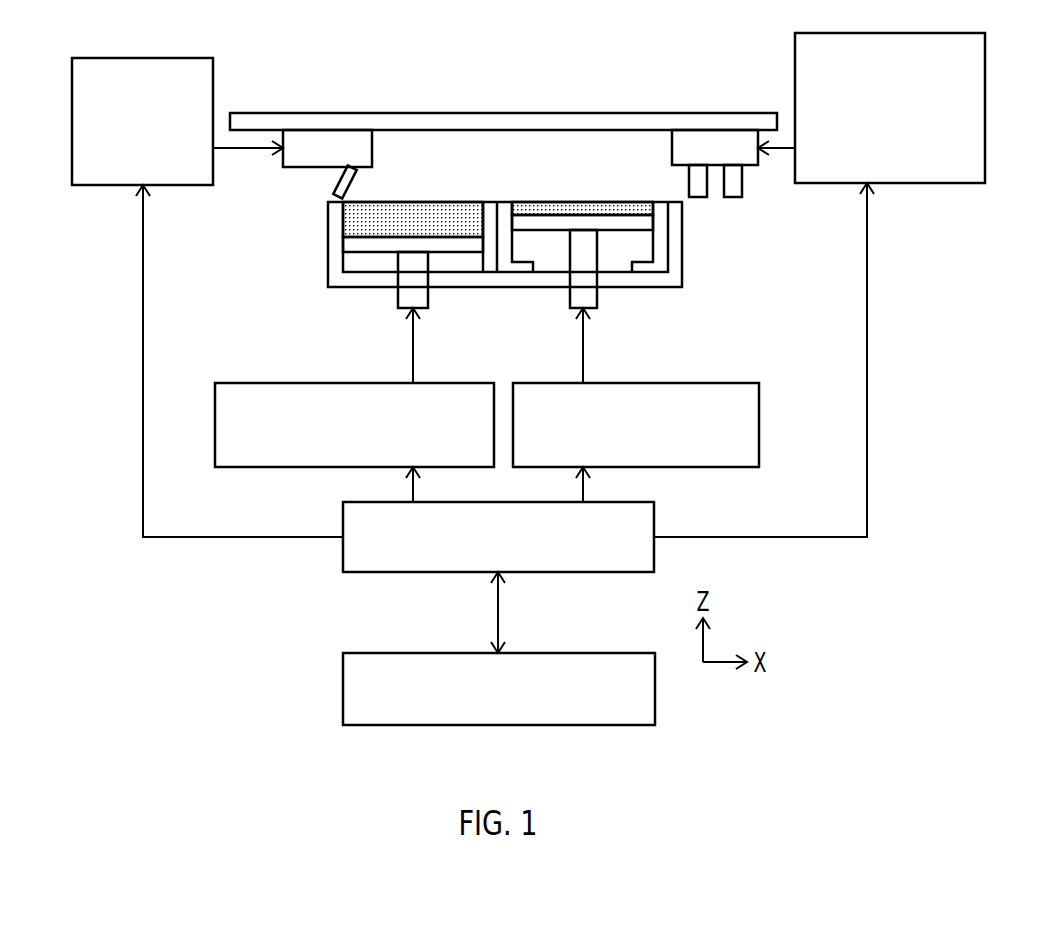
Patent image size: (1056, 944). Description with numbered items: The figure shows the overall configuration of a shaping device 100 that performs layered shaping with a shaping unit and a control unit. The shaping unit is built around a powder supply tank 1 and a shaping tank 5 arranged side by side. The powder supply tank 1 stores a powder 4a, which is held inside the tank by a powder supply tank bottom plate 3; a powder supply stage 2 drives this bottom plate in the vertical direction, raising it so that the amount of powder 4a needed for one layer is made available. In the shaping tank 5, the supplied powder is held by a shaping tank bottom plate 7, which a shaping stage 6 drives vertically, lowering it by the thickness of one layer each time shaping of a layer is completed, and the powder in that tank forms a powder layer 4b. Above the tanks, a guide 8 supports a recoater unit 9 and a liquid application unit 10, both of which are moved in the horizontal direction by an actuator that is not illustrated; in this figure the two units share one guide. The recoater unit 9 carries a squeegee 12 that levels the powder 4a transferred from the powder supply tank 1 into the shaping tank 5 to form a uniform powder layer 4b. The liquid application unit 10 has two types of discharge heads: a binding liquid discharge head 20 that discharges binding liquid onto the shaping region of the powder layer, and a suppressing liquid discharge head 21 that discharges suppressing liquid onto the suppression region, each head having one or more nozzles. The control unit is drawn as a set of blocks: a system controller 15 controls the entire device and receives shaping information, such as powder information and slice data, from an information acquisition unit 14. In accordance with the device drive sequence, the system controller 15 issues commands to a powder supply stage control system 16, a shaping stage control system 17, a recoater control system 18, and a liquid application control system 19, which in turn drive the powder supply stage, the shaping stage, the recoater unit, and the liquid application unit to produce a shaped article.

The shaping device 100 is at (593, 80).
The powder supply tank 1 is at (348, 280).
The powder supply stage 2 is at (408, 295).
The powder supply tank bottom plate 3 is at (348, 242).
The powder 4a is at (407, 213).
The powder layer 4b is at (587, 203).
The shaping tank 5 is at (520, 268).
The shaping stage 6 is at (577, 295).
The shaping tank bottom plate 7 is at (647, 220).
The guide 8 is at (503, 122).
The recoater unit 9 is at (318, 148).
The liquid application unit 10 is at (713, 143).
The squeegee 12 is at (330, 193).
The information acquisition unit 14 is at (350, 705).
The system controller 15 is at (353, 555).
The powder supply stage control system 16 is at (228, 448).
The shaping stage control system 17 is at (750, 448).
The recoater control system 18 is at (78, 158).
The liquid application control system 19 is at (982, 140).
The binding liquid discharge head 20 is at (735, 183).
The suppressing liquid discharge head 21 is at (697, 197).